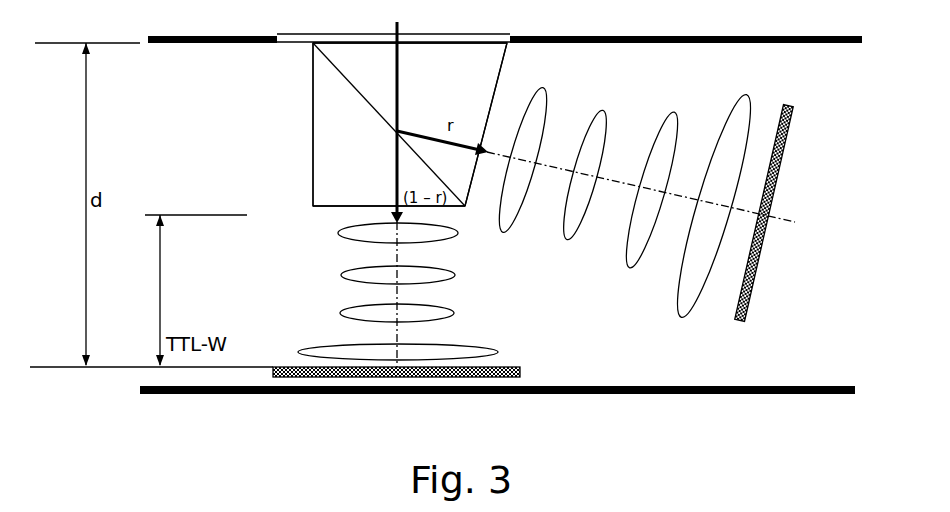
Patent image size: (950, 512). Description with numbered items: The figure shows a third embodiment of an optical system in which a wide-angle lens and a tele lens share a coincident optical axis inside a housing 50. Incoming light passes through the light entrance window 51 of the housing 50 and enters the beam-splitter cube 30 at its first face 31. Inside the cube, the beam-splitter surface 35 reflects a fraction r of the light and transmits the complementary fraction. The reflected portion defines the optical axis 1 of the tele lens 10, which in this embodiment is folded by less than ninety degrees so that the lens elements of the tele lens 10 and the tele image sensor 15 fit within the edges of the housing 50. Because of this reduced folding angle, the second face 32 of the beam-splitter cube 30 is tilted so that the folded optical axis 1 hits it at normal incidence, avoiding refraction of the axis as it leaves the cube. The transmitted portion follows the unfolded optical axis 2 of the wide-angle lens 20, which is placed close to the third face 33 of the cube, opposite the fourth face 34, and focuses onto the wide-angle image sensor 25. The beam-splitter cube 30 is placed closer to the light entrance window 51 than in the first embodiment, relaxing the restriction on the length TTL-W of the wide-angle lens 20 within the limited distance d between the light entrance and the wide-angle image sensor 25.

The optical axis of the tele lens 1 is at (693, 197).
The optical axis of wide-angle lens 2 is at (447, 333).
The tele lens 10 is at (626, 188).
The image sensor of tele lens 15 is at (793, 130).
The wide-angle lens 20 is at (387, 287).
The image sensor of wide-angle lens 25 is at (520, 371).
The beam-splitter cube 30 is at (410, 124).
The first face of beam-splitter cube 31 is at (462, 47).
The second face of beam-splitter cube 32 is at (504, 62).
The third face of beam-splitter cube 33 is at (432, 207).
The fourth face of beam-splitter cube 34 is at (313, 185).
The beam-splitter surface 35 is at (358, 90).
The housing 50 is at (818, 43).
The light entrance window 51 is at (302, 45).